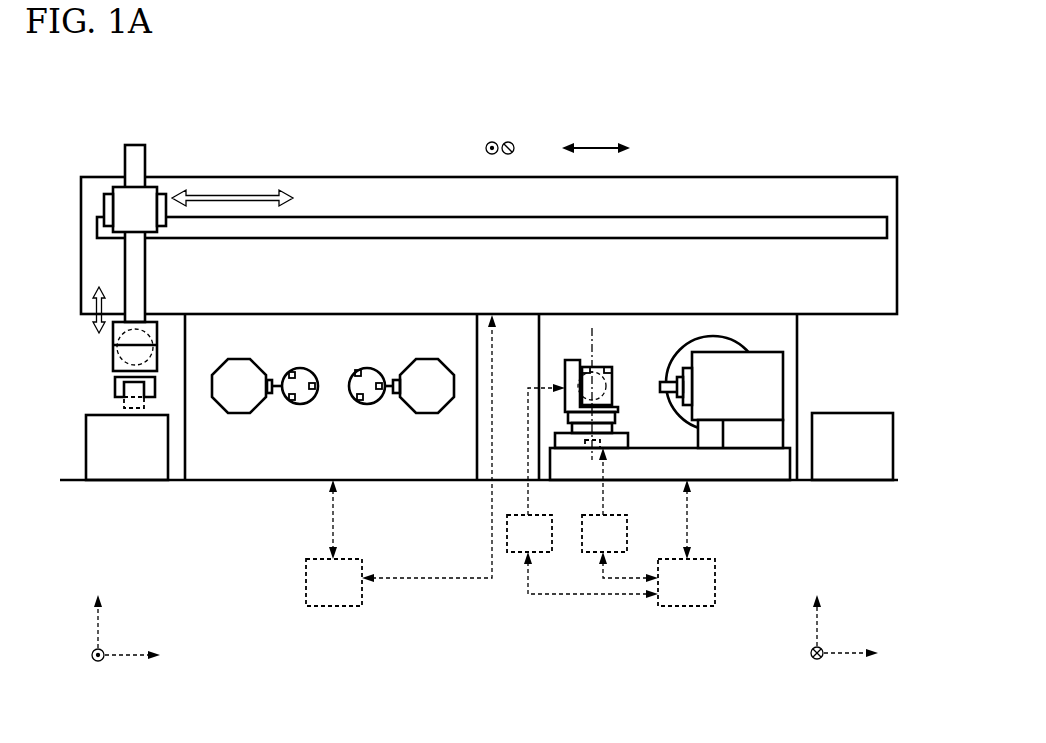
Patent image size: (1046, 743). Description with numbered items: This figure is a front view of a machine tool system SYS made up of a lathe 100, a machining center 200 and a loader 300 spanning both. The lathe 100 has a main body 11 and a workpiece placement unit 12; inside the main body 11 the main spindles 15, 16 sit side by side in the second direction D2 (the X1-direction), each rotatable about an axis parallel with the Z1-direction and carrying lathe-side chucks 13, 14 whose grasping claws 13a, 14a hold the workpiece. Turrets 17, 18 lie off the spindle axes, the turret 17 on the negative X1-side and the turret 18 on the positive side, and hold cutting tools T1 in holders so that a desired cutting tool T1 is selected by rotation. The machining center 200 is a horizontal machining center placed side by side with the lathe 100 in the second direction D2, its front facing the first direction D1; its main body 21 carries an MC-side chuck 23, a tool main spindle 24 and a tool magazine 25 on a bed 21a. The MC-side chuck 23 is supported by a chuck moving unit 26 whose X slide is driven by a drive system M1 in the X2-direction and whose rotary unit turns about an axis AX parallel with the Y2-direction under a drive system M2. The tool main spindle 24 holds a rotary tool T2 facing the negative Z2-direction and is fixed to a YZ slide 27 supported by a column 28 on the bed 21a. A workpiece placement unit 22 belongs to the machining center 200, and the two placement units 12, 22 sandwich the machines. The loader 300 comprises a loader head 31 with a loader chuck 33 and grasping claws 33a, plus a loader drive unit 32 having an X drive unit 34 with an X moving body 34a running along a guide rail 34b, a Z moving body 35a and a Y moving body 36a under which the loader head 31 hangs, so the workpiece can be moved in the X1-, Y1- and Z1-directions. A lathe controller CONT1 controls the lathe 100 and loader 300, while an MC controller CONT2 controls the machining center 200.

The machine tool system SYS is at (757, 138).
The loader 300 is at (418, 168).
The lathe 100 is at (213, 497).
The X drive unit 34 is at (317, 115).
The X moving body 34a is at (164, 195).
The guide rail 34b is at (305, 222).
The Z moving body 35a is at (120, 197).
The Y moving body 36a is at (140, 258).
The loader drive unit 32 is at (86, 191).
The loader head 31 is at (100, 348).
The loader chuck 33 is at (117, 377).
The grasping claws 33a is at (125, 397).
The workpiece placement unit 12 is at (98, 471).
The workpiece placement unit 22 is at (878, 471).
The main body 11 is at (462, 470).
The turret 17 is at (222, 377).
The lathe-side chuck 13 is at (307, 372).
The grasping claws 13a is at (292, 371).
The lathe-side chuck 14 is at (372, 374).
The grasping claws 14a is at (358, 370).
The turret 18 is at (443, 374).
The cutting tool T1 is at (282, 390).
The main spindle 15 is at (306, 428).
The main spindle 16 is at (373, 428).
The bed 21a is at (737, 470).
The main body 21 is at (798, 362).
The MC-side chuck 23 is at (603, 366).
The axis AX is at (590, 347).
The chuck moving unit 26 is at (632, 392).
The tool magazine 25 is at (725, 340).
The YZ slide 27 is at (773, 360).
The column 28 is at (767, 440).
The tool main spindle 24 is at (687, 367).
The rotary tool T2 is at (668, 389).
The machining center 200 is at (762, 532).
The first direction D1 is at (499, 130).
The second direction D2 is at (596, 129).
The lathe controller CONT1 is at (333, 607).
The MC controller CONT2 is at (687, 607).
The drive system M1 is at (620, 515).
The drive system M2 is at (582, 491).
The X1-direction X1 is at (148, 653).
The Y1-direction Y1 is at (97, 610).
The Z1-direction Z1 is at (88, 680).
The X2-direction X2 is at (803, 680).
The Y2-direction Y2 is at (816, 609).
The Z2-direction Z2 is at (868, 652).